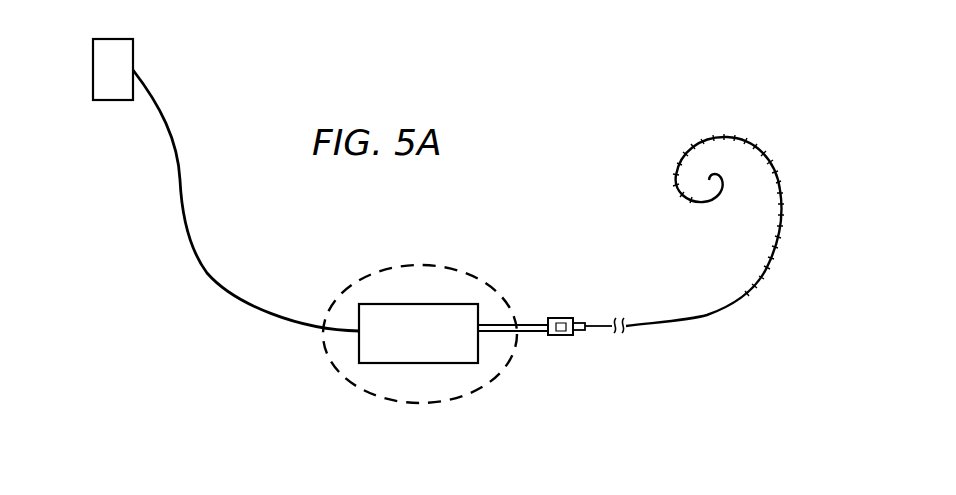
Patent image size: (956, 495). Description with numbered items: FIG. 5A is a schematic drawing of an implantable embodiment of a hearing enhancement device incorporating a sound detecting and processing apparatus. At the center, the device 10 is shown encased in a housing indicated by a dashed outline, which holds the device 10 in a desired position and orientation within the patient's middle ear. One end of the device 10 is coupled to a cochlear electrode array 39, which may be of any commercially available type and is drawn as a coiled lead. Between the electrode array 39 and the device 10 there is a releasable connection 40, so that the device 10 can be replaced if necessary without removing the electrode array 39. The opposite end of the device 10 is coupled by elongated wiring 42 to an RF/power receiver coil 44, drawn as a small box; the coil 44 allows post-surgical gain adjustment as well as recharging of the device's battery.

The RF/power receiver coil 44 is at (127, 53).
The elongated wiring 42 is at (207, 275).
The device 10 is at (392, 352).
The releasable connection 40 is at (548, 338).
The cochlear electrode array 39 is at (762, 150).